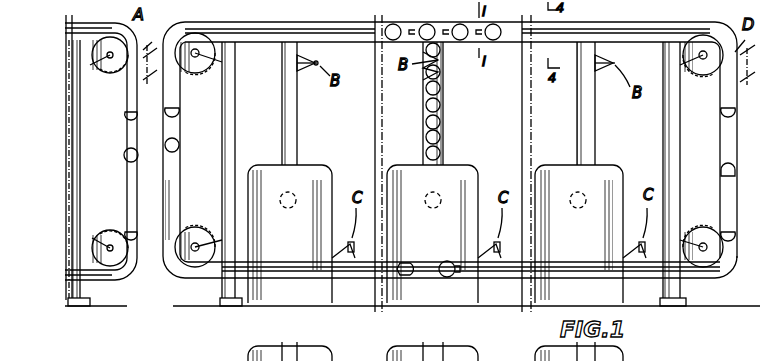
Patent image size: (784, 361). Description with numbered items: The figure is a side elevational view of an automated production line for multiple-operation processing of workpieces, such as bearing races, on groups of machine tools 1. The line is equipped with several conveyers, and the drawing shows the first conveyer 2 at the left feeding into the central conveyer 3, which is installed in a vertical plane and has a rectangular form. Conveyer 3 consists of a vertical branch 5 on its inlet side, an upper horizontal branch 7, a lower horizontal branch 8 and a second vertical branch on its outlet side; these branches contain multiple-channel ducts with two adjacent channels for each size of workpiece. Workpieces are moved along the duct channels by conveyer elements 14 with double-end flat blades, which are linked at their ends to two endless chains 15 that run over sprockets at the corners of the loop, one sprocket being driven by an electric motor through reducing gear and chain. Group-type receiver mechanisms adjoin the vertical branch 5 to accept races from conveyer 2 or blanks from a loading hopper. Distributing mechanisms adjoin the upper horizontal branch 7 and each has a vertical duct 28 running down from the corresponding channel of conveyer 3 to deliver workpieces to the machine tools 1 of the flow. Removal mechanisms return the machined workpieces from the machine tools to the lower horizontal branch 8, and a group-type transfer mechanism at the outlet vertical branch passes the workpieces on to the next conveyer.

The machine tools 1 is at (300, 185).
The conveyer 2 is at (121, 86).
The conveyer 3 is at (325, 40).
The vertical branch 5 is at (163, 240).
The horizontal branch 7 is at (245, 33).
The horizontal branch 8 is at (300, 279).
The conveyer elements 14 is at (182, 120).
The endless chains 15 is at (600, 23).
The vertical duct 28 is at (598, 130).